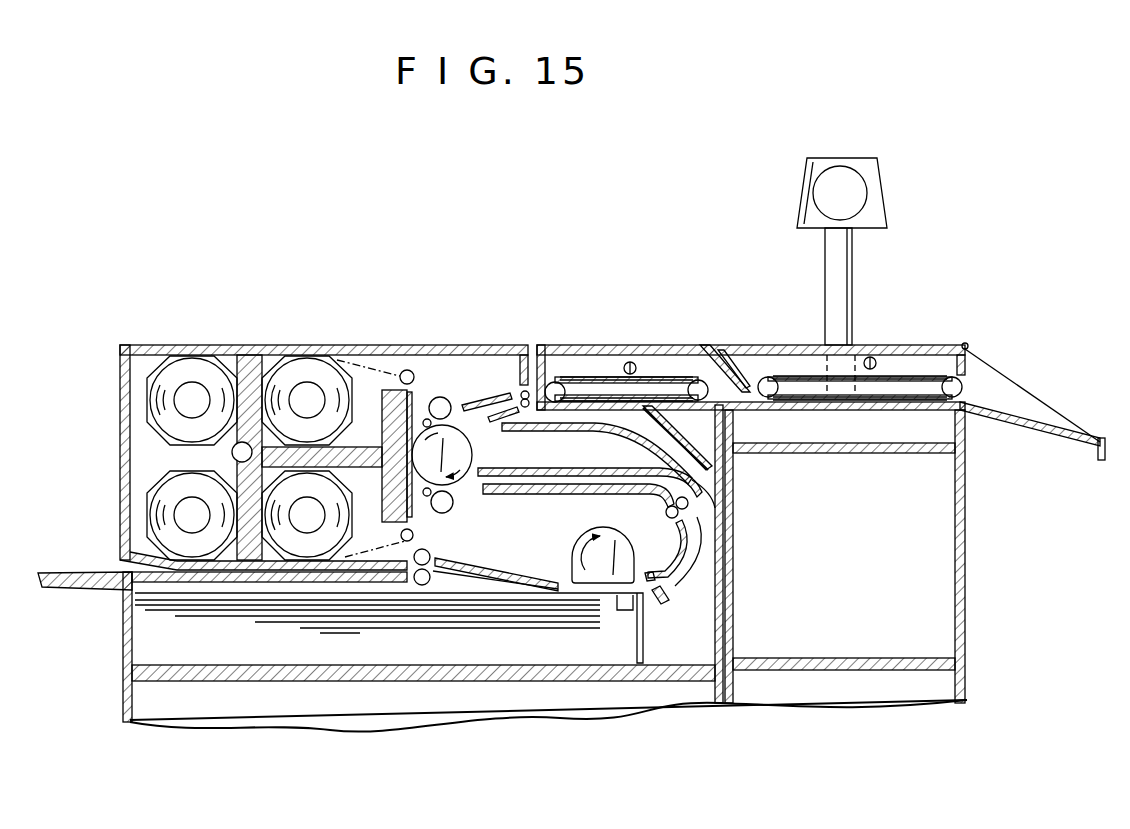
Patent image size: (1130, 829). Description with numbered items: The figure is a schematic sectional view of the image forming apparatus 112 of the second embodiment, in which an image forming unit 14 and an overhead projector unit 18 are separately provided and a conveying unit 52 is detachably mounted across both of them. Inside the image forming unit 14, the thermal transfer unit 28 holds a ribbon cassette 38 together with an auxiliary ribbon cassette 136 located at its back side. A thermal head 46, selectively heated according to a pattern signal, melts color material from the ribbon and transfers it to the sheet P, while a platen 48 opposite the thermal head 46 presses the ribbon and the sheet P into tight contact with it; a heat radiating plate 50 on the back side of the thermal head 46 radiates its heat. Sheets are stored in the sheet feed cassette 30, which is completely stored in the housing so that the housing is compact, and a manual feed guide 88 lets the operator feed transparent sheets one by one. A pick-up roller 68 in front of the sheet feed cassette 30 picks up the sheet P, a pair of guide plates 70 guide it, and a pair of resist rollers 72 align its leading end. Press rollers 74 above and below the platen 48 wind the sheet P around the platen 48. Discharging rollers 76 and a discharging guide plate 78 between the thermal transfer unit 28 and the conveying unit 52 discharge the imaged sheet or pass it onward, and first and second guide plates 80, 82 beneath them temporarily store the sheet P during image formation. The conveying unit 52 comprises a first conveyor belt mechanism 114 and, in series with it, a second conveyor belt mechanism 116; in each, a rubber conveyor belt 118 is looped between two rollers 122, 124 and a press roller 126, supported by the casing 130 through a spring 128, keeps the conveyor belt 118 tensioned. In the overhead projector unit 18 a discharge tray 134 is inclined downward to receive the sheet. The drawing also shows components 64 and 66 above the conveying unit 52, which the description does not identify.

The image forming apparatus 112 is at (200, 231).
The image forming unit 14 is at (321, 326).
The auxiliary ribbon cassette 136 is at (200, 352).
The ribbon cassette 38 is at (252, 352).
The thermal transfer unit 28 is at (460, 352).
The heat radiating plate 50 is at (372, 352).
The platen 48 is at (472, 450).
The press rollers 74 is at (440, 397).
The discharging guide plate 78 is at (481, 396).
The discharging rollers 76 is at (517, 388).
The thermal head 46 is at (413, 512).
The sheet feed cassette 30 is at (123, 647).
The sheet P is at (587, 610).
The manual feed guide 88 is at (98, 590).
The first guide plate 80 is at (563, 484).
The second guide plate 82 is at (602, 429).
The resist rollers 72 is at (655, 487).
The pick-up roller 68 is at (617, 552).
The guide plates 70 is at (667, 590).
The overhead projector unit 18 is at (979, 255).
The conveying unit 52 is at (677, 324).
The first conveyor belt mechanism 114 is at (555, 378).
The roller 122 is at (552, 380).
The conveyor belt 118 is at (568, 375).
The spring 128 is at (626, 362).
The press roller 126 is at (636, 370).
The roller 124 is at (693, 378).
The casing 130 is at (750, 340).
The second conveyor belt mechanism 116 is at (938, 350).
The head unit 64 is at (883, 182).
The support shaft 66 is at (855, 255).
The discharge tray 134 is at (1053, 412).